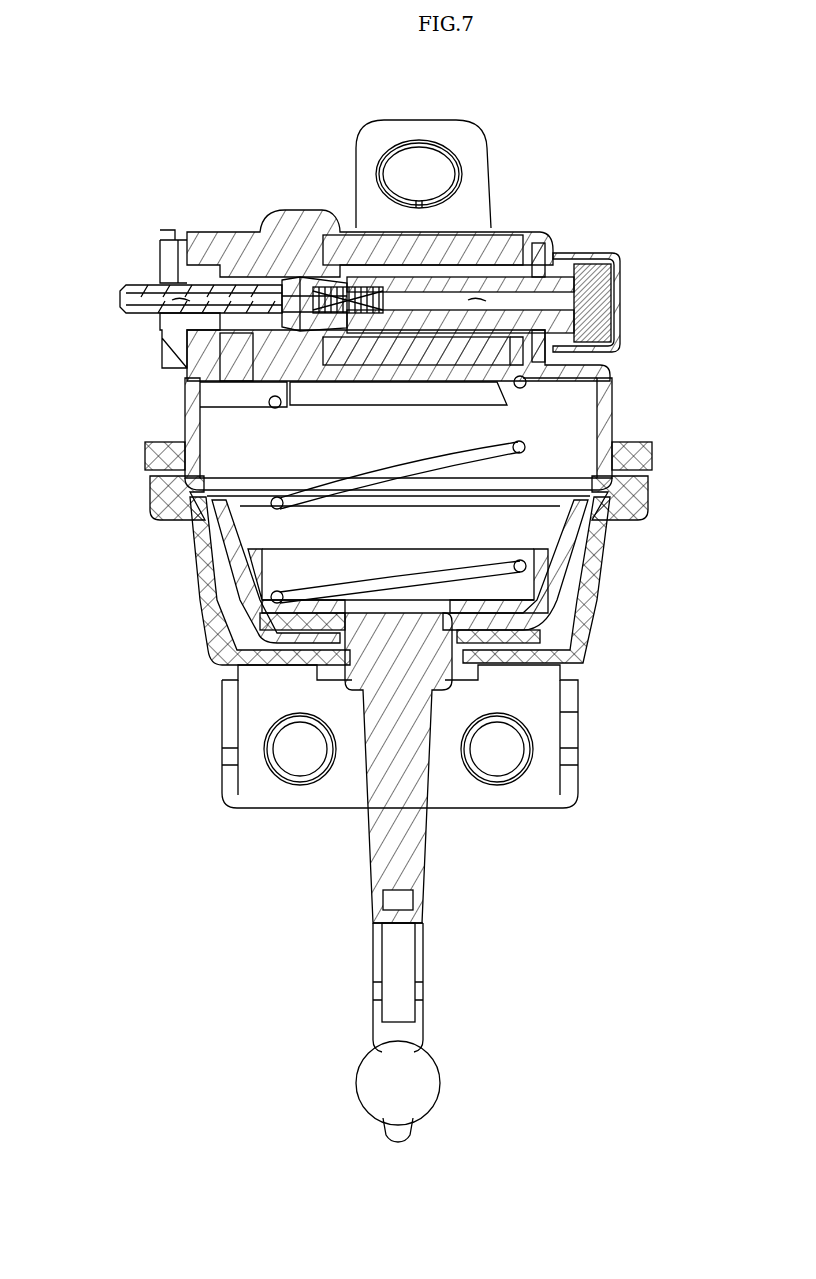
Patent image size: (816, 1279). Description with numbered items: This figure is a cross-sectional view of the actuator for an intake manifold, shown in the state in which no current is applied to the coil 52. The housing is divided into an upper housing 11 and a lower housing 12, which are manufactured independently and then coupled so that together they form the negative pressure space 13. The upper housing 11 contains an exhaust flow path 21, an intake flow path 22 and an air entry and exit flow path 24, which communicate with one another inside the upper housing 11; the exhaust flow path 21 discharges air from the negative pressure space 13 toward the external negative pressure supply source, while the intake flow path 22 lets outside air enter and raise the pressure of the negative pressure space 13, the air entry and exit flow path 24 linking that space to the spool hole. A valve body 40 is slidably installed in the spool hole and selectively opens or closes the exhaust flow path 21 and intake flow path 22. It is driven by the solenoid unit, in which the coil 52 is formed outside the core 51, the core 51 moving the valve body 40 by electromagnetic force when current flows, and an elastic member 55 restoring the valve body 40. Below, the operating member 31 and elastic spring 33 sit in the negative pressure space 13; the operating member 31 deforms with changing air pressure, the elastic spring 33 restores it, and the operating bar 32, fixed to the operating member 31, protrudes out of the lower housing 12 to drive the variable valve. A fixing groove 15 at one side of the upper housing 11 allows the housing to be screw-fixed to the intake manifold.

The upper housing 11 is at (210, 242).
The lower housing 12 is at (200, 575).
The negative pressure space 13 is at (290, 455).
The fixing groove 15 is at (438, 165).
The exhaust flow path 21 is at (185, 322).
The intake flow path 22 is at (618, 258).
The air entry and exit flow path 24 is at (237, 357).
The operating member 31 is at (243, 608).
The operating bar 32 is at (380, 863).
The elastic spring 33 is at (583, 664).
The valve body 40 is at (298, 286).
The core 51 is at (585, 303).
The coil 52 is at (493, 248).
The elastic member 55 is at (360, 277).